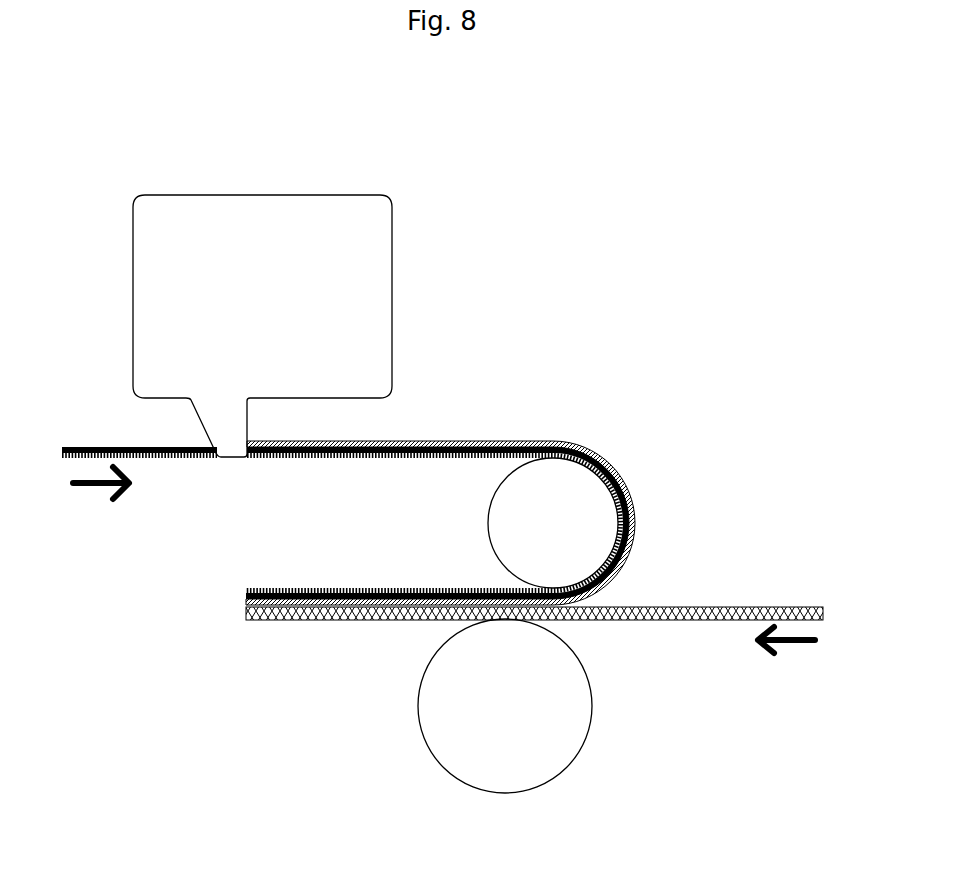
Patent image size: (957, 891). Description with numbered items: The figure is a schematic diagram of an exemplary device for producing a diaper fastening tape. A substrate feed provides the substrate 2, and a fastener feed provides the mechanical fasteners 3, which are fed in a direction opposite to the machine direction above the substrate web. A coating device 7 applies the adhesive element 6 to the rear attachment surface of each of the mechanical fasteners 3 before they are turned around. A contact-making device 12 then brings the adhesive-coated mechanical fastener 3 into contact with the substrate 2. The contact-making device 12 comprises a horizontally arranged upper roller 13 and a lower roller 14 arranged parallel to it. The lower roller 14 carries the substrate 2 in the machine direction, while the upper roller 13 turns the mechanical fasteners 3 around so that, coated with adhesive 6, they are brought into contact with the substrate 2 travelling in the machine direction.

The substrate 2 is at (534, 575).
The mechanical fasteners 3 is at (137, 406).
The adhesive element 6 is at (440, 461).
The coating device 7 is at (262, 267).
The contact-making device 12 is at (743, 703).
The upper roller 13 is at (609, 513).
The lower roller 14 is at (546, 726).